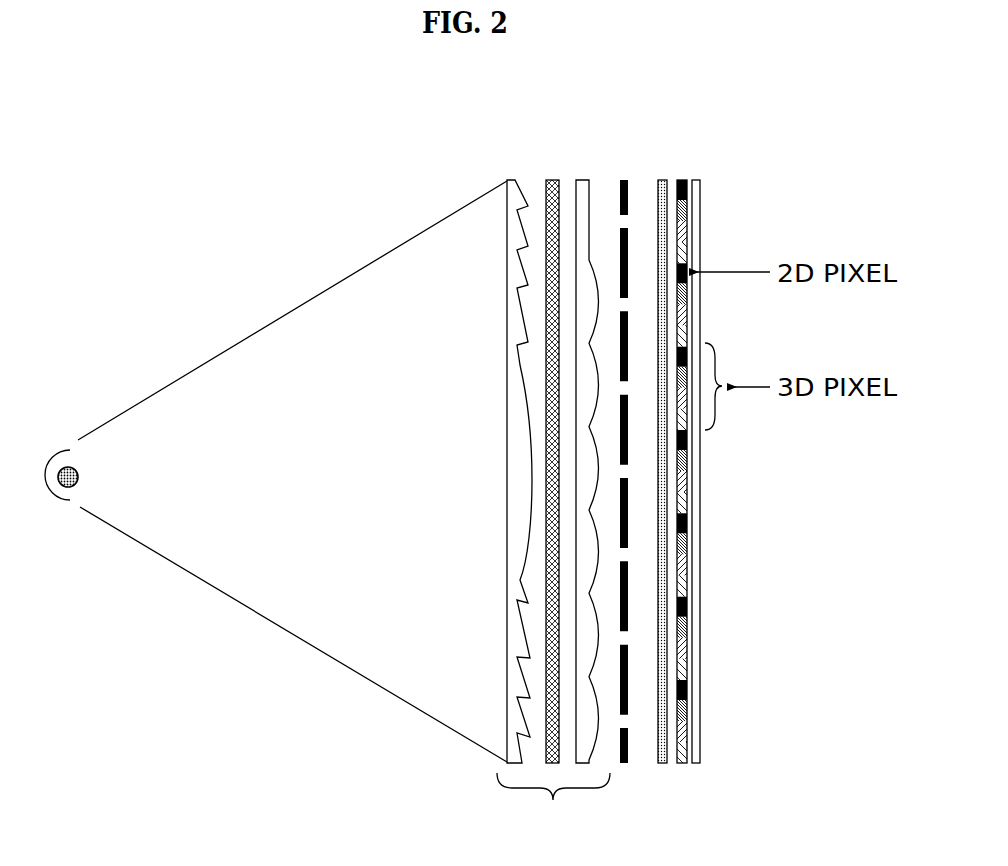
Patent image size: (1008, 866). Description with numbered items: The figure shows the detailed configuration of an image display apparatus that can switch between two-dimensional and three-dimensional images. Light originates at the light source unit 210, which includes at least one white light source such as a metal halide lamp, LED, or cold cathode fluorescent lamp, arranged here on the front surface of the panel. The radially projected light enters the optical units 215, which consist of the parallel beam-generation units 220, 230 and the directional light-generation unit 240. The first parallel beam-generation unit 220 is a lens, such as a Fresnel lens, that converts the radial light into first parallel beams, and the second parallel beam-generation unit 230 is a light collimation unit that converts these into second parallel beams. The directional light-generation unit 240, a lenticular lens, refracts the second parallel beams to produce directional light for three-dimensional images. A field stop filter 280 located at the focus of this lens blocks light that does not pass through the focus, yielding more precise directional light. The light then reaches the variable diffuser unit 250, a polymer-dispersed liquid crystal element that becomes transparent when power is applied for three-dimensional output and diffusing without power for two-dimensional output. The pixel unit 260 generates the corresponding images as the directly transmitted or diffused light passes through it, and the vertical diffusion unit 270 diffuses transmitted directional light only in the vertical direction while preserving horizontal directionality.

The light source unit 210 is at (70, 450).
The optical units 215 is at (553, 803).
The parallel beam-generation unit 220 is at (492, 194).
The parallel beam-generation unit 230 is at (542, 192).
The directional light-generation unit 240 is at (586, 192).
The variable diffuser unit 250 is at (659, 178).
The pixel unit 260 is at (681, 182).
The vertical diffusion unit 270 is at (700, 185).
The field stop filter 280 is at (623, 178).